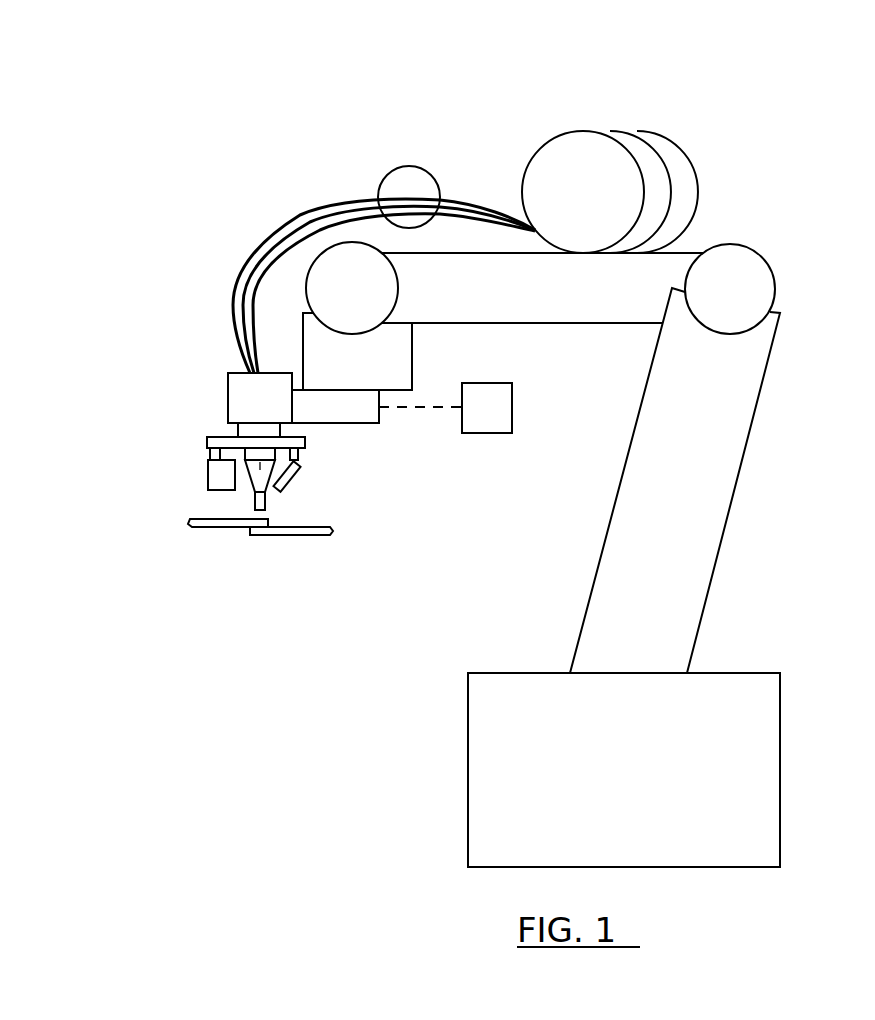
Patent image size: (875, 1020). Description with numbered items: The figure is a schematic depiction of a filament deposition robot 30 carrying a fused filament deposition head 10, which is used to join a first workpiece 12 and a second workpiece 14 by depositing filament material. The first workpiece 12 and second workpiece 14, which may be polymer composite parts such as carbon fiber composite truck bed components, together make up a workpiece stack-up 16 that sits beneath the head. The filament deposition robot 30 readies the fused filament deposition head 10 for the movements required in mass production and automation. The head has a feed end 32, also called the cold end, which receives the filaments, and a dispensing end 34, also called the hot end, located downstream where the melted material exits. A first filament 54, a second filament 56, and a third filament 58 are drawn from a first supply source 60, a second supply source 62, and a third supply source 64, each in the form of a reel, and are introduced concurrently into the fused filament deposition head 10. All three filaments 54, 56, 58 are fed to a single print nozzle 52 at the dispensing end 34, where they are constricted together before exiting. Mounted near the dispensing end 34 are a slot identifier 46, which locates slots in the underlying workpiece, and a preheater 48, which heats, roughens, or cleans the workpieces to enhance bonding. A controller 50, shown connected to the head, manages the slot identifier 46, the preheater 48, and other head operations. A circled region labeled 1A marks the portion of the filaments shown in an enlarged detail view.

The fused filament deposition head 10 is at (198, 418).
The first workpiece 12 is at (200, 528).
The second workpiece 14 is at (300, 536).
The workpiece stack-up 16 is at (254, 541).
The filament deposition robot 30 is at (772, 367).
The feed end 32 is at (228, 377).
The dispensing end 34 is at (264, 493).
The slot identifier 46 is at (208, 467).
The preheater 48 is at (287, 484).
The controller 50 is at (475, 421).
The print nozzle 52 is at (258, 470).
The first filament 54 is at (323, 208).
The second filament 56 is at (293, 230).
The third filament 58 is at (263, 273).
The first supply source 60 is at (582, 130).
The second supply source 62 is at (607, 130).
The third supply source 64 is at (640, 130).
The detail region of FIG. 1A is at (413, 167).